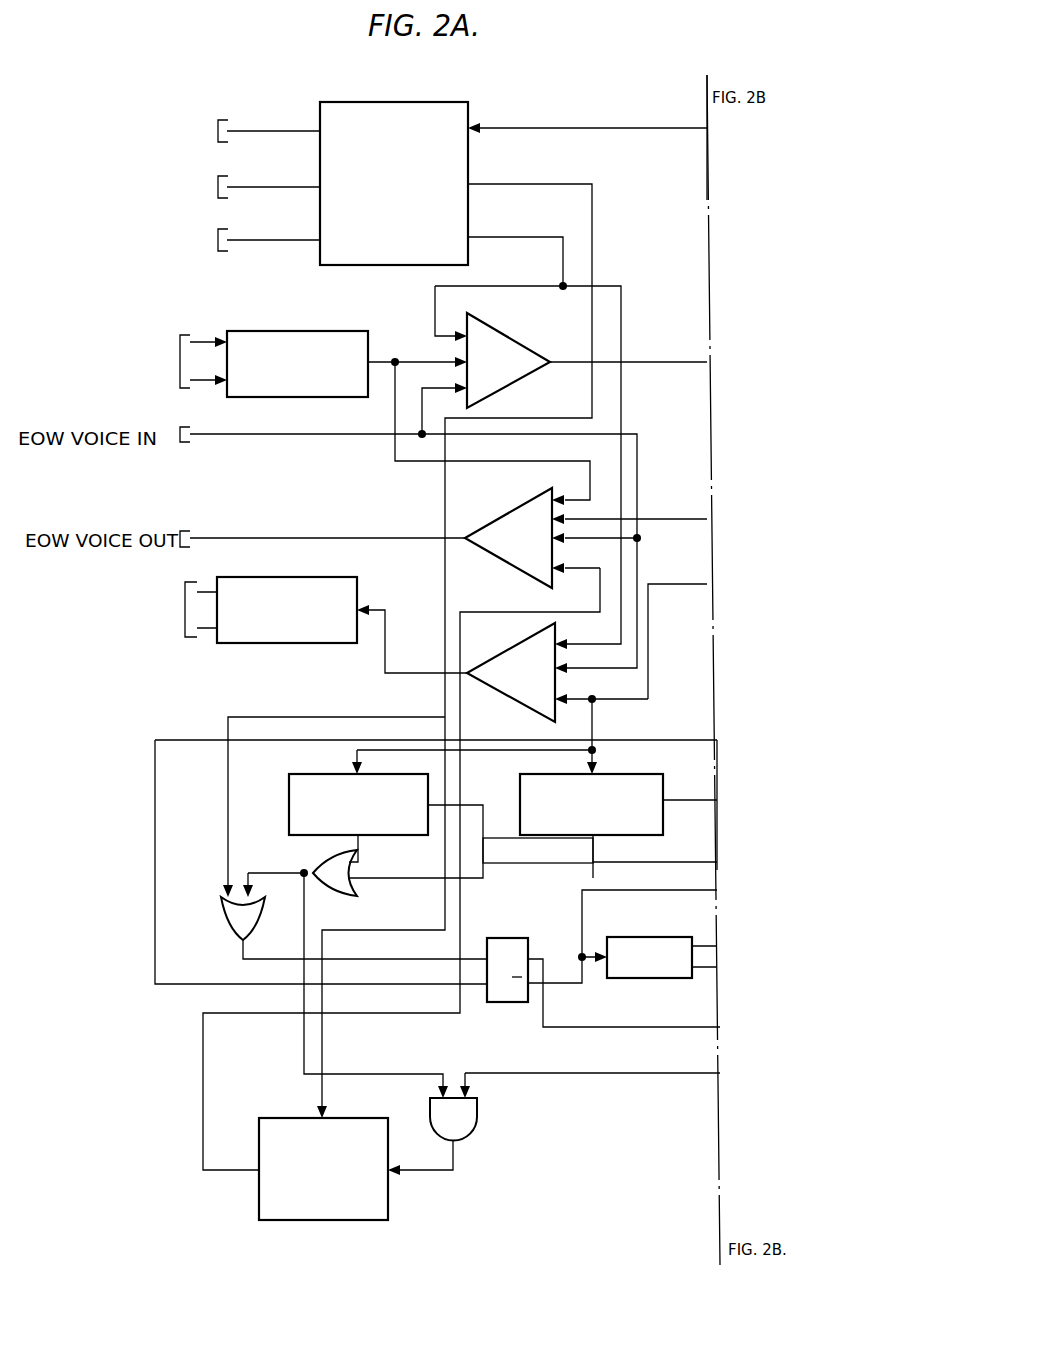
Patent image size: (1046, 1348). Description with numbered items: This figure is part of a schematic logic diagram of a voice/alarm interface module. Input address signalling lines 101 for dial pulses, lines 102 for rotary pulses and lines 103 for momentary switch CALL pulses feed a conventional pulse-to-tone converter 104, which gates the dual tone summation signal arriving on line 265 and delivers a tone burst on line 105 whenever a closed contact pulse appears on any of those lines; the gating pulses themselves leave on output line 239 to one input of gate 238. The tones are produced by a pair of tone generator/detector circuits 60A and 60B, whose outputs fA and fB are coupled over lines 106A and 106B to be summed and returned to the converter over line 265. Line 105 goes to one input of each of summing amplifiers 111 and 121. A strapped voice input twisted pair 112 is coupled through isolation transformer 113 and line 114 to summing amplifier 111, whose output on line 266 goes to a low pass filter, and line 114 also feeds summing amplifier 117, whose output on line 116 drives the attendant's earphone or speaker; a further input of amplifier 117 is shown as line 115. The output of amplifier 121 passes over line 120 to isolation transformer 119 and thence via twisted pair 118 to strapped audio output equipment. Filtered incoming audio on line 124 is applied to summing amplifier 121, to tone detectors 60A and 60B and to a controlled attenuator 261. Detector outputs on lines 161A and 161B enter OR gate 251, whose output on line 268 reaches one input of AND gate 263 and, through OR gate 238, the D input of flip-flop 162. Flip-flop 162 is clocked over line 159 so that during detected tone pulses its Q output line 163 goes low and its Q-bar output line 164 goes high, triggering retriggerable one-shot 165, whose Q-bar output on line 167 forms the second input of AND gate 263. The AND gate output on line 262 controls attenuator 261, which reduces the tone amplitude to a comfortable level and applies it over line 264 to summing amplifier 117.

The input address signalling lines 101 is at (290, 131).
The lines for rotary pulse signals 102 is at (301, 187).
The lines for momentary switch pulses 103 is at (301, 240).
The pulse-to-tone converter 104 is at (408, 102).
The output line 105 is at (541, 237).
The summing amplifier 111 is at (500, 334).
The strapped voice input twisted pair 112 is at (199, 348).
The isolation transformer 113 is at (276, 331).
The line 114 is at (379, 362).
The input line 115 is at (575, 538).
The line 116 is at (338, 538).
The summing amplifier 117 is at (510, 513).
The twisted pair 118 is at (204, 615).
The isolation transformer 119 is at (295, 643).
The line 120 is at (386, 635).
The summing amplifier 121 is at (514, 649).
The line 124 is at (658, 590).
The line 159 is at (155, 868).
The line 161A is at (356, 858).
The line 161B is at (556, 878).
The flip-flop 162 is at (514, 940).
The Q output line 163 is at (620, 1027).
The Q-bar output line 164 is at (566, 978).
The retriggerable one-shot 165 is at (672, 937).
The line 167 is at (592, 1073).
The gate 238 is at (222, 925).
The output line 239 is at (592, 214).
The OR gate 251 is at (335, 896).
The controlled attenuator 261 is at (298, 1118).
The line 262 is at (426, 1172).
The AND gate 263 is at (478, 1122).
The line 264 is at (203, 1102).
The line 265 is at (554, 128).
The line 266 is at (680, 362).
The line 268 is at (295, 870).
The tone generator/detector circuit 60A is at (288, 804).
The tone generator/detector circuit 60B is at (520, 804).
The line 106A is at (653, 863).
The line 106B is at (672, 805).